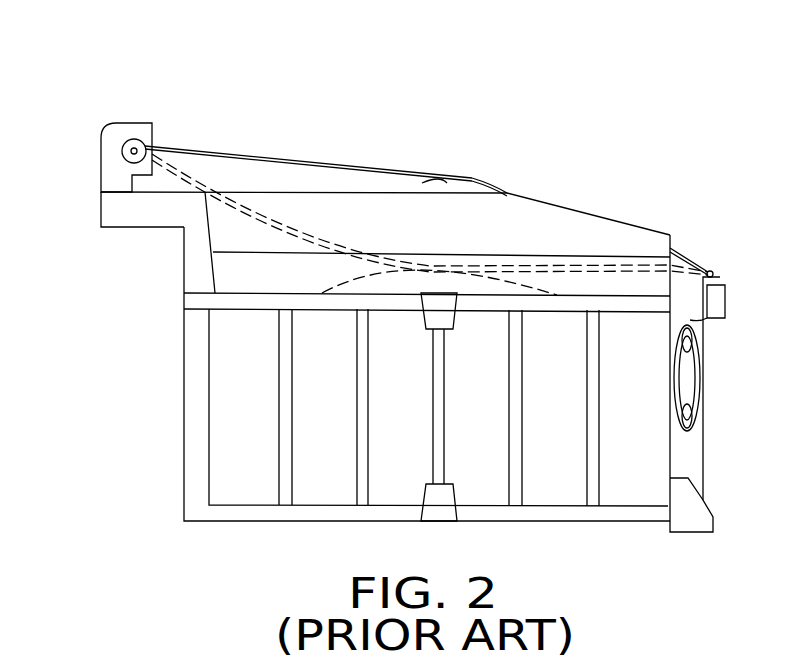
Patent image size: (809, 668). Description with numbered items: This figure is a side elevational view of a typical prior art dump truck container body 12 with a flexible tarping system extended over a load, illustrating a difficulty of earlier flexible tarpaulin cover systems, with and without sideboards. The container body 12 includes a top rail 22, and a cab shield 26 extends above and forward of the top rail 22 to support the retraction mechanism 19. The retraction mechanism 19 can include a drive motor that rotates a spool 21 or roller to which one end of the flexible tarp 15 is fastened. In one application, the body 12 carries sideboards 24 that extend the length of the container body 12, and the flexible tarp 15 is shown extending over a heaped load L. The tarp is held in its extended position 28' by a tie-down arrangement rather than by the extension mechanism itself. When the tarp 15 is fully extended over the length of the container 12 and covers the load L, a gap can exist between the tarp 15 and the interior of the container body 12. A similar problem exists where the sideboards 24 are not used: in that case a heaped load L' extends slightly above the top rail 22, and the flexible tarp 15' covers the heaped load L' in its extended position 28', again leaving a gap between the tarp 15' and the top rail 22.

The container body 12 is at (192, 407).
The flexible tarp 15 is at (308, 119).
The flexible tarp 15' is at (430, 214).
The retraction mechanism 19 is at (120, 135).
The spool 21 is at (131, 158).
The top rail 22 is at (248, 300).
The sideboards 24 is at (565, 227).
The cab shield 26 is at (140, 213).
The extended position 28' is at (715, 226).
The heaped load L is at (464, 146).
The heaped load L' is at (439, 258).